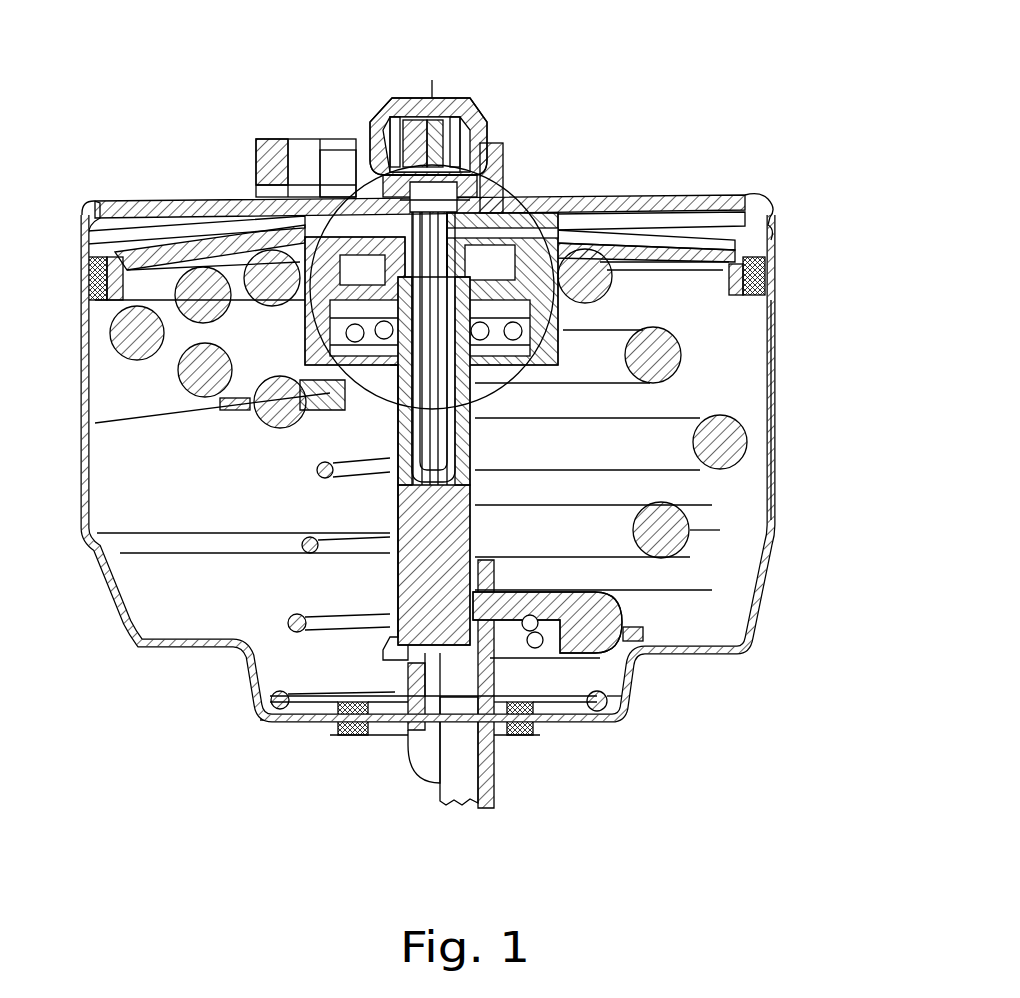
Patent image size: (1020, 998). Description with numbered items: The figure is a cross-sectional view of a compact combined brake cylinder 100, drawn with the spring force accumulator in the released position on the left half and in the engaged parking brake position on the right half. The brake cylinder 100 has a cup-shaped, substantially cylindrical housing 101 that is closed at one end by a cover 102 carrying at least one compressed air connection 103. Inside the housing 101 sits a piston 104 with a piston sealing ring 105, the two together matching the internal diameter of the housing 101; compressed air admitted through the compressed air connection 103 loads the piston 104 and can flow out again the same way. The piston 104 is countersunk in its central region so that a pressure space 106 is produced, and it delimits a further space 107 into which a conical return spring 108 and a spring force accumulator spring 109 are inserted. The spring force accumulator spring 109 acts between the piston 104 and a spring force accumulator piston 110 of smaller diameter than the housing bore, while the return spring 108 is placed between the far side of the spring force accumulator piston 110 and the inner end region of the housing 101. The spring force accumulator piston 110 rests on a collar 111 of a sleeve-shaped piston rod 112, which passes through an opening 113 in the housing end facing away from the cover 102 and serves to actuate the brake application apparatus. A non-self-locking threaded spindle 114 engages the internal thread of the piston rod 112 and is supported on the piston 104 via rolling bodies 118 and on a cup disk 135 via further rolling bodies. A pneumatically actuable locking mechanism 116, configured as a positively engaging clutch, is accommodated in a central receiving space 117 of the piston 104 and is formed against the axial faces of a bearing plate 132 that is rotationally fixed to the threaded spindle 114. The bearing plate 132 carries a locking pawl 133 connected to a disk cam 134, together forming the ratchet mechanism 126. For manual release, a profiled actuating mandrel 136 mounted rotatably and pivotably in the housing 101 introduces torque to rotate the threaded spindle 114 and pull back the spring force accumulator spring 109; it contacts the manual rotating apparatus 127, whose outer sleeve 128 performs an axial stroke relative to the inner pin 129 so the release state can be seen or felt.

The brake cylinder 100 is at (742, 648).
The housing 101 is at (778, 497).
The cover 102 is at (127, 208).
The compressed air connection 103 is at (337, 160).
The piston 104 is at (197, 268).
The piston sealing ring 105 is at (90, 280).
The pressure space 106 is at (280, 187).
The further space 107 is at (705, 487).
The return spring 108 is at (612, 718).
The spring force accumulator spring 109 is at (668, 530).
The spring force accumulator piston 110 is at (320, 378).
The collar 111 is at (357, 400).
The piston rod 112 is at (420, 740).
The opening 113 is at (500, 747).
The threaded spindle 114 is at (393, 633).
The locking mechanism 116 is at (560, 322).
The central receiving space 117 is at (313, 335).
The rolling bodies 118 is at (343, 545).
The ratchet mechanism 126 is at (750, 194).
The manual rotating apparatus 127 is at (483, 110).
The outer sleeve 128 is at (500, 132).
The inner pin 129 is at (433, 118).
The bearing plate 132 is at (505, 289).
The locking pawl 133 is at (743, 262).
The disk cam 134 is at (512, 238).
The cup disk 135 is at (505, 212).
The actuating mandrel 136 is at (507, 187).